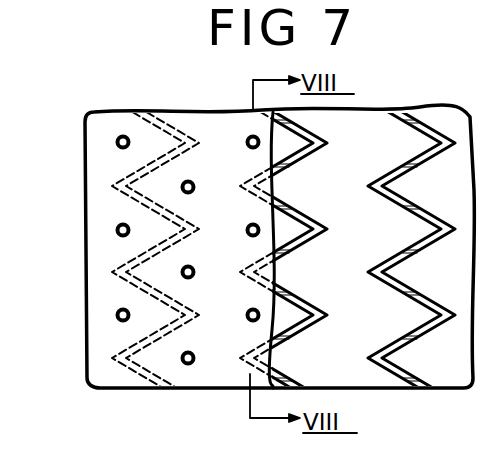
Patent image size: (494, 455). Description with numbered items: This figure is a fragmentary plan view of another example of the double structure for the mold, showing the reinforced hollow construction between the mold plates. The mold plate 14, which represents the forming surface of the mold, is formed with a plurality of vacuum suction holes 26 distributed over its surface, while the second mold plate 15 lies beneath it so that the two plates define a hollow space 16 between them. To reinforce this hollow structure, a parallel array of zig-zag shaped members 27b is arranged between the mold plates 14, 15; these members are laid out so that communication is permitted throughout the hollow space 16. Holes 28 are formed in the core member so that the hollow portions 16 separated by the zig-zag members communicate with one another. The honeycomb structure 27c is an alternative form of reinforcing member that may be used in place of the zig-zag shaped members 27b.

The sheet material 14 is at (110, 163).
The lower layer 15 is at (372, 374).
The second surface portion 16 is at (380, 247).
The apertures 26 is at (116, 230).
The zigzag strip 27b is at (187, 134).
The zigzag strip 27c is at (471, 15).
The cut lines 28 is at (285, 250).